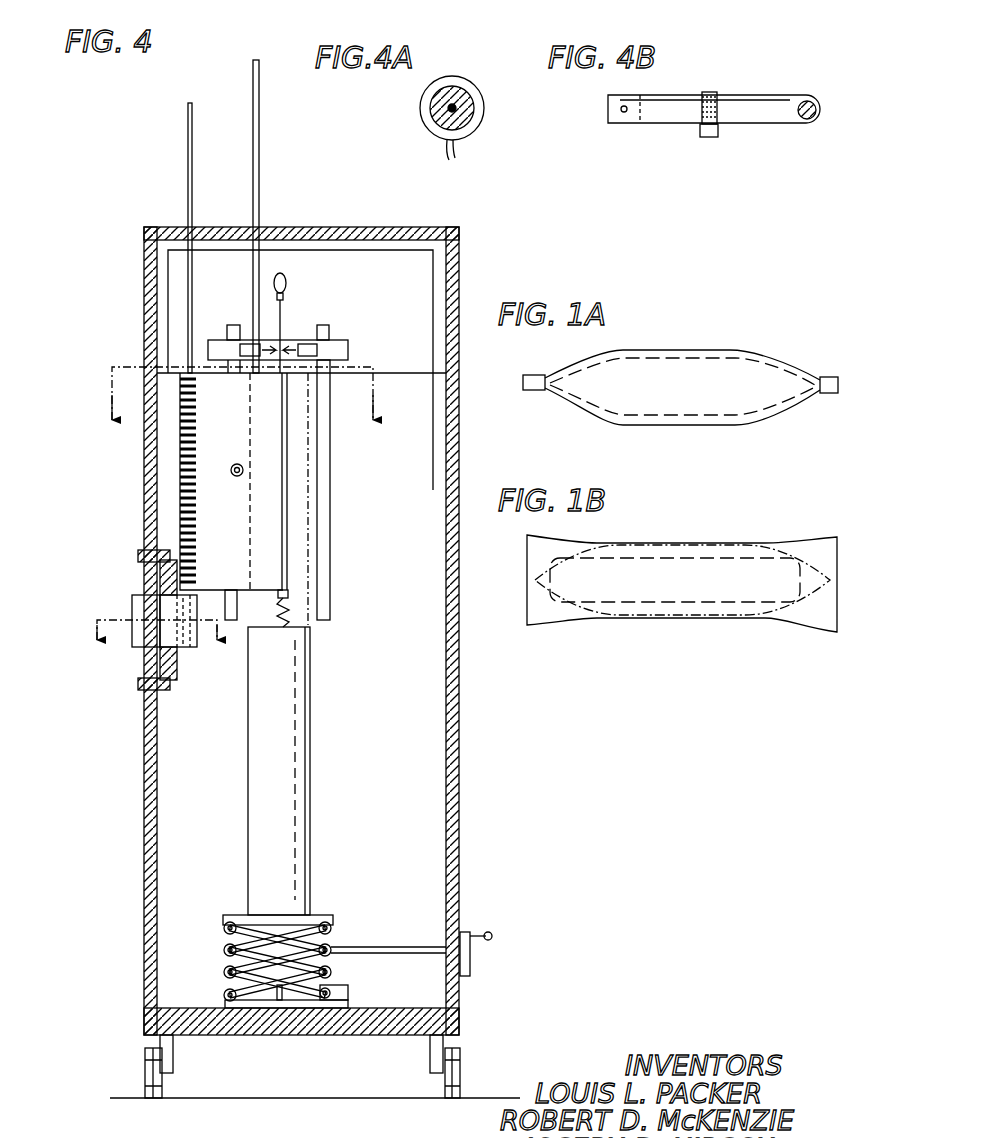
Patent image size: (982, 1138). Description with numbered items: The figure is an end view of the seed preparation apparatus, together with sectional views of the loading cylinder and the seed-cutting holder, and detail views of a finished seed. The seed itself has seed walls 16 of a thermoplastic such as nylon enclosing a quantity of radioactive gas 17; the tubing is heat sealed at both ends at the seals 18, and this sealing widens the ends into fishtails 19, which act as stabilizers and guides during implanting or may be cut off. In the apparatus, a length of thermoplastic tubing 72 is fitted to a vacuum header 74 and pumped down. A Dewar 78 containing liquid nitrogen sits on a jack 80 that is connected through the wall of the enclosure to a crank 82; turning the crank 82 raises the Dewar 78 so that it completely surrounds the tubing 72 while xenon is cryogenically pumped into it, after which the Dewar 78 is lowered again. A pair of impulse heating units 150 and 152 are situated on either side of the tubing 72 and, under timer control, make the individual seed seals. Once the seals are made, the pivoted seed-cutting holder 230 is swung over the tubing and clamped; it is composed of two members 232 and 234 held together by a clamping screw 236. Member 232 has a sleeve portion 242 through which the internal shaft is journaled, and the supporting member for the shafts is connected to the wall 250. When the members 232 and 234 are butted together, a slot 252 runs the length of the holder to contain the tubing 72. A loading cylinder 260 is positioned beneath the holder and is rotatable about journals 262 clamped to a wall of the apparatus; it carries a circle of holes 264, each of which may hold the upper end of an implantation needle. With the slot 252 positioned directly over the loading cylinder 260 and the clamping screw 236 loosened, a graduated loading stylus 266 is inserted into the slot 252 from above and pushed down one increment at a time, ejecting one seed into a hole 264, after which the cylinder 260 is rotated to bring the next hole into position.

In FIG. 1A, the seed walls 16 is at (703, 350).
In FIG. 1B, the seed walls 16 is at (710, 543).
In FIG. 1A, the radioactive gas 17 is at (640, 368).
In FIG. 1B, the radioactive gas 17 is at (650, 565).
In FIG. 1A, the heat seal 18 is at (530, 374).
In FIG. 1B, the fishtails 19 is at (540, 622).
In FIG. 4, the thermoplastic tubing 72 is at (286, 318).
In FIG. 4, the vacuum header 74 is at (288, 290).
In FIG. 4, the Dewar 78 is at (306, 708).
In FIG. 4, the jack 80 is at (225, 950).
In FIG. 4, the crank 82 is at (490, 936).
In FIG. 4, the impulse heating unit 150 is at (215, 332).
In FIG. 4, the impulse heating unit 152 is at (350, 347).
In FIG. 4, the seed-cutting holder 230 is at (172, 507).
In FIG. 4B, the seed-cutting holder 230 is at (740, 138).
In FIG. 4B, the seed-cutting holder member 232 is at (760, 80).
In FIG. 4B, the seed-cutting holder member 234 is at (778, 122).
In FIG. 4, the clamping screw 236 is at (235, 464).
In FIG. 4B, the clamping screw 236 is at (705, 137).
In FIG. 4B, the sleeve portion 242 is at (808, 96).
In FIG. 4, the wall 250 is at (150, 845).
In FIG. 4B, the slot 252 is at (612, 104).
In FIG. 4, the loading cylinder 260 is at (132, 610).
In FIG. 4A, the loading cylinder 260 is at (420, 108).
In FIG. 4, the journals 262 is at (140, 575).
In FIG. 4A, the holes 264 is at (474, 161).
In FIG. 4, the loading stylus 266 is at (188, 150).